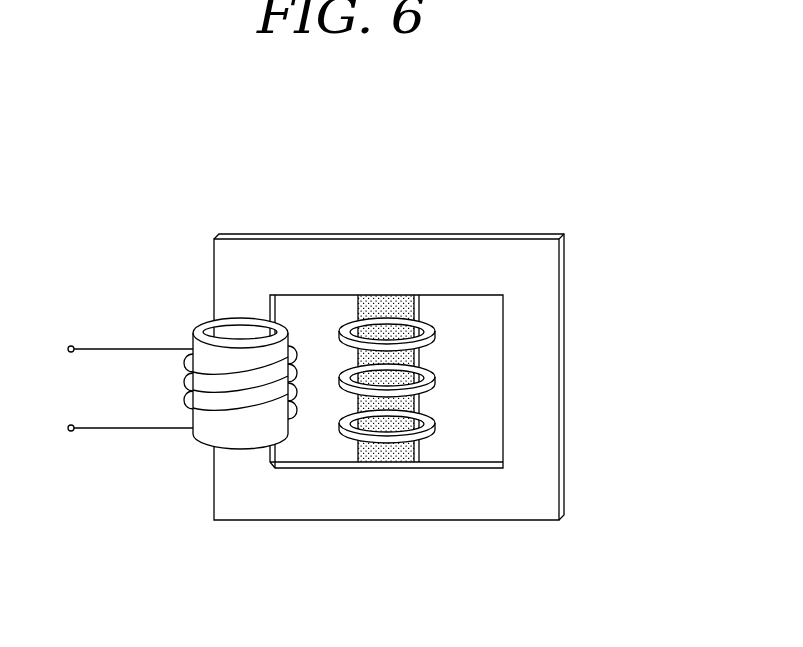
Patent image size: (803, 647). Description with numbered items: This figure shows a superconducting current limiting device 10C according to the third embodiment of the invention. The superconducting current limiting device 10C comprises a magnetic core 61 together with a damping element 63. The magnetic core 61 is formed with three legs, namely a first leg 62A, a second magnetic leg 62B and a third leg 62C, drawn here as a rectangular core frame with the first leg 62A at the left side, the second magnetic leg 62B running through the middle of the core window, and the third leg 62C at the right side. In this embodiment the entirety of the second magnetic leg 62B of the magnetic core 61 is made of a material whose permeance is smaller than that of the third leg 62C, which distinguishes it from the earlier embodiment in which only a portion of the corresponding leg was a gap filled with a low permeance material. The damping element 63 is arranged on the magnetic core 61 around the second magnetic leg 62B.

The superconducting current limiting device 10C is at (640, 137).
The magnetic core 61 is at (568, 280).
The first leg 62A is at (238, 298).
The second magnetic leg 62B is at (387, 322).
The third leg 62C is at (545, 443).
The damping element 63 is at (445, 425).